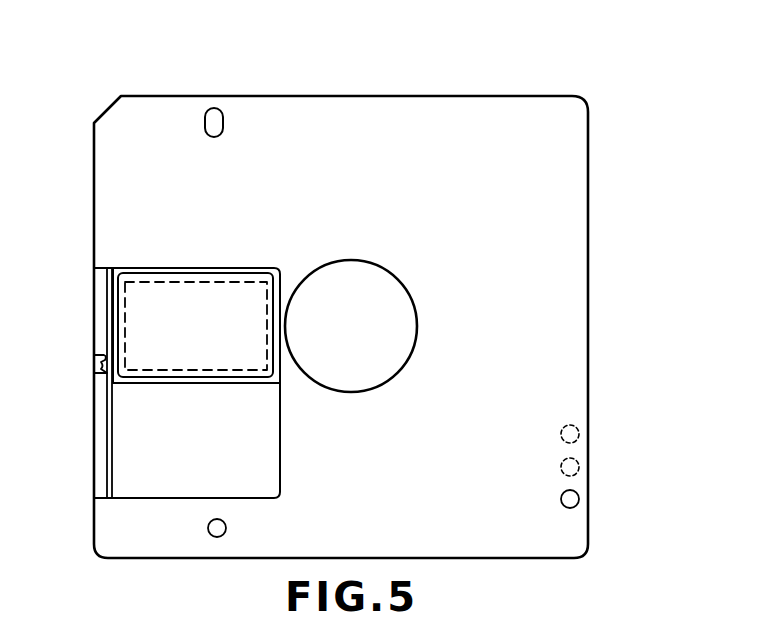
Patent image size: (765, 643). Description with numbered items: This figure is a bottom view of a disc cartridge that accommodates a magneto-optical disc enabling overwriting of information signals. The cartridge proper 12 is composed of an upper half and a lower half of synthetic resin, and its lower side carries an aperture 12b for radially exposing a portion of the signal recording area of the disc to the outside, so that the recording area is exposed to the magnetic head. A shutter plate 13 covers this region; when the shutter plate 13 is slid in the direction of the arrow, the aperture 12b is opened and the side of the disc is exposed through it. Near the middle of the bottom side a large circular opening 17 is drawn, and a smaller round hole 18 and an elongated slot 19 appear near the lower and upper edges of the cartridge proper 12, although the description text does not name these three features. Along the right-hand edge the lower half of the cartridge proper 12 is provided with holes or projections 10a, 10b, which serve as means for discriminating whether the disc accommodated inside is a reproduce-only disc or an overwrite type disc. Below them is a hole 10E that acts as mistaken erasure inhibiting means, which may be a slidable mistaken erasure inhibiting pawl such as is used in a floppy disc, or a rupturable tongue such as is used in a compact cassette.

The cartridge proper 12 is at (504, 90).
The aperture 12b is at (232, 270).
The shutter plate 13 is at (142, 303).
The hub hole 17 is at (387, 318).
The positioning hole 18 is at (207, 528).
The positioning slot 19 is at (219, 118).
The hole or projection 10a is at (579, 434).
The hole or projection 10b is at (579, 467).
The hole 10E is at (579, 499).